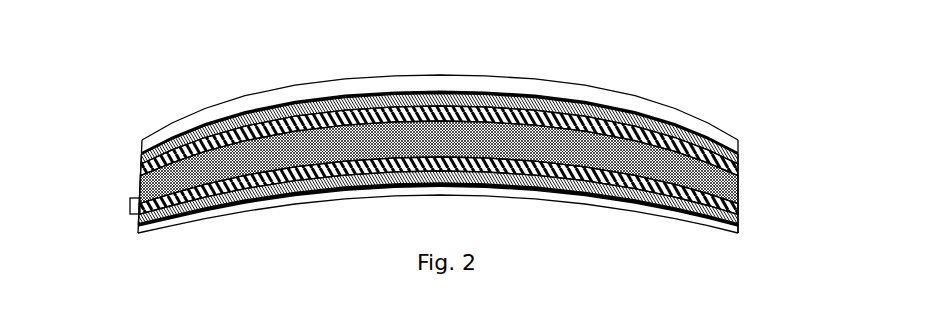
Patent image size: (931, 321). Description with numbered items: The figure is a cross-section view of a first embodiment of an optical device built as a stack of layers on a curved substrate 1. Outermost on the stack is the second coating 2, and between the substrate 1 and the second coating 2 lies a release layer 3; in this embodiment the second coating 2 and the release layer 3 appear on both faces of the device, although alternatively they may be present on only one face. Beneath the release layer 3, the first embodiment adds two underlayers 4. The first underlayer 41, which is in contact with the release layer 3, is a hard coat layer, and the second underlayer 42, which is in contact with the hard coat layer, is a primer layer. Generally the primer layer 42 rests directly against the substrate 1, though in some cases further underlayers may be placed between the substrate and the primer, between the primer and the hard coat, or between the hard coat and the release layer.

The substrate 1 is at (142, 150).
The second coating 2 is at (508, 86).
The release layer 3 is at (645, 110).
The underlayers 4 is at (130, 206).
The first underlayer 41 is at (738, 220).
The second underlayer 42 is at (739, 199).